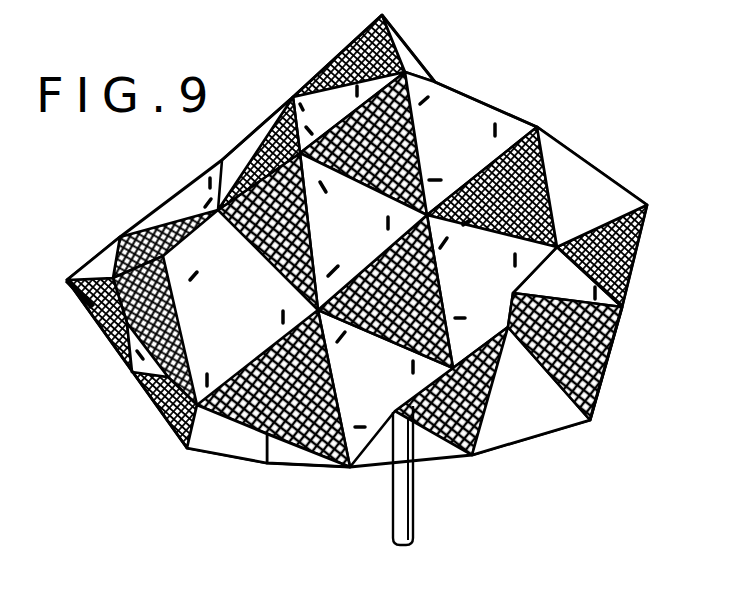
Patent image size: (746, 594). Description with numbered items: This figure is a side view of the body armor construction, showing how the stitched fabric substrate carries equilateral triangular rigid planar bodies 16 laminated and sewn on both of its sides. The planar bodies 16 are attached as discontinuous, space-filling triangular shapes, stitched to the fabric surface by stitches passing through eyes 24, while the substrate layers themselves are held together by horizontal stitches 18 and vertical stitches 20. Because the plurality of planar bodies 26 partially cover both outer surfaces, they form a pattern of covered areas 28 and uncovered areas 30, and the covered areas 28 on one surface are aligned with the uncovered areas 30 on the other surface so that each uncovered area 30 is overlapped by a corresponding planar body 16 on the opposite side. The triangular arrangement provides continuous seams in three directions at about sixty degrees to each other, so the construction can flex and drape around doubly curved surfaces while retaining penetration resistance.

The planar body 16 is at (530, 418).
The horizontal stitches 18 is at (600, 379).
The vertical stitches 20 is at (615, 338).
The eyes 24 is at (257, 450).
The planar bodies 26 is at (88, 280).
The covered areas 28 is at (590, 173).
The uncovered areas 30 is at (643, 247).